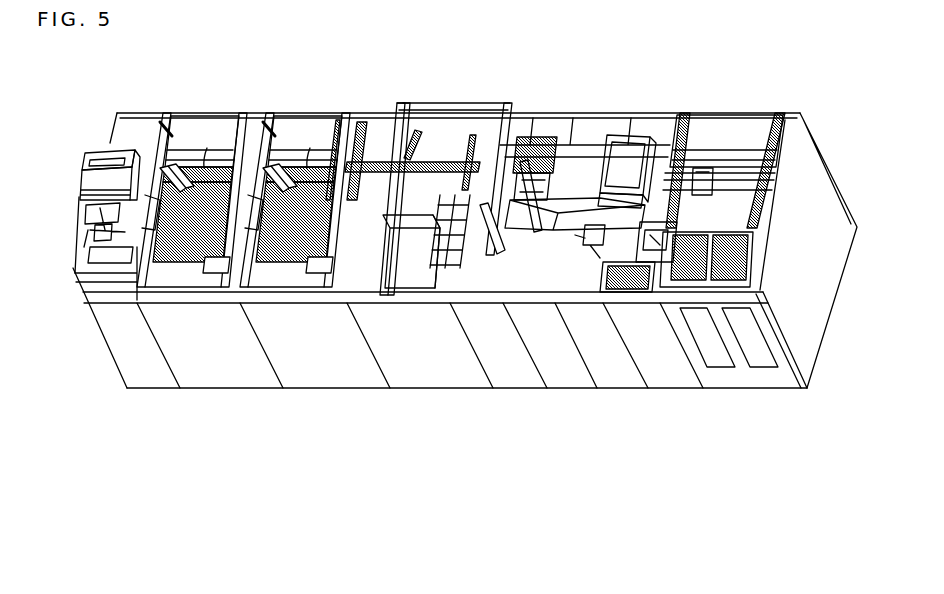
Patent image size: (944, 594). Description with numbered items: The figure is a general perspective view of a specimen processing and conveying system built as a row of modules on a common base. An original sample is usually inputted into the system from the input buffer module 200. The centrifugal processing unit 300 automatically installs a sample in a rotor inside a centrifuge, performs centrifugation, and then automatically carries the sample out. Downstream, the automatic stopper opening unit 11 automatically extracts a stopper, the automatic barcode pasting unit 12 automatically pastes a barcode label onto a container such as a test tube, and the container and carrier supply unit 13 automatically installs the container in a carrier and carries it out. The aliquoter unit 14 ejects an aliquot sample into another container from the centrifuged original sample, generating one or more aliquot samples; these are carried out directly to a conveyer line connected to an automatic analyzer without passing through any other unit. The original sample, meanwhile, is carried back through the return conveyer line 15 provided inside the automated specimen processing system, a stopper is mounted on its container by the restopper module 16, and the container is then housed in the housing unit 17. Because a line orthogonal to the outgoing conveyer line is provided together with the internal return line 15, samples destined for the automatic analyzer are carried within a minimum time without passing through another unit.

The return conveyer line 15 is at (566, 113).
The restopper module 16 is at (148, 386).
The housing unit 17 is at (233, 386).
The input buffer module 200 is at (337, 386).
The centrifugal processing unit 300 is at (438, 377).
The automatic stopper opening unit 11 is at (563, 386).
The automatic barcode pasting unit 12 is at (617, 386).
The container and carrier supply unit 13 is at (668, 386).
The aliquoter unit 14 is at (740, 386).